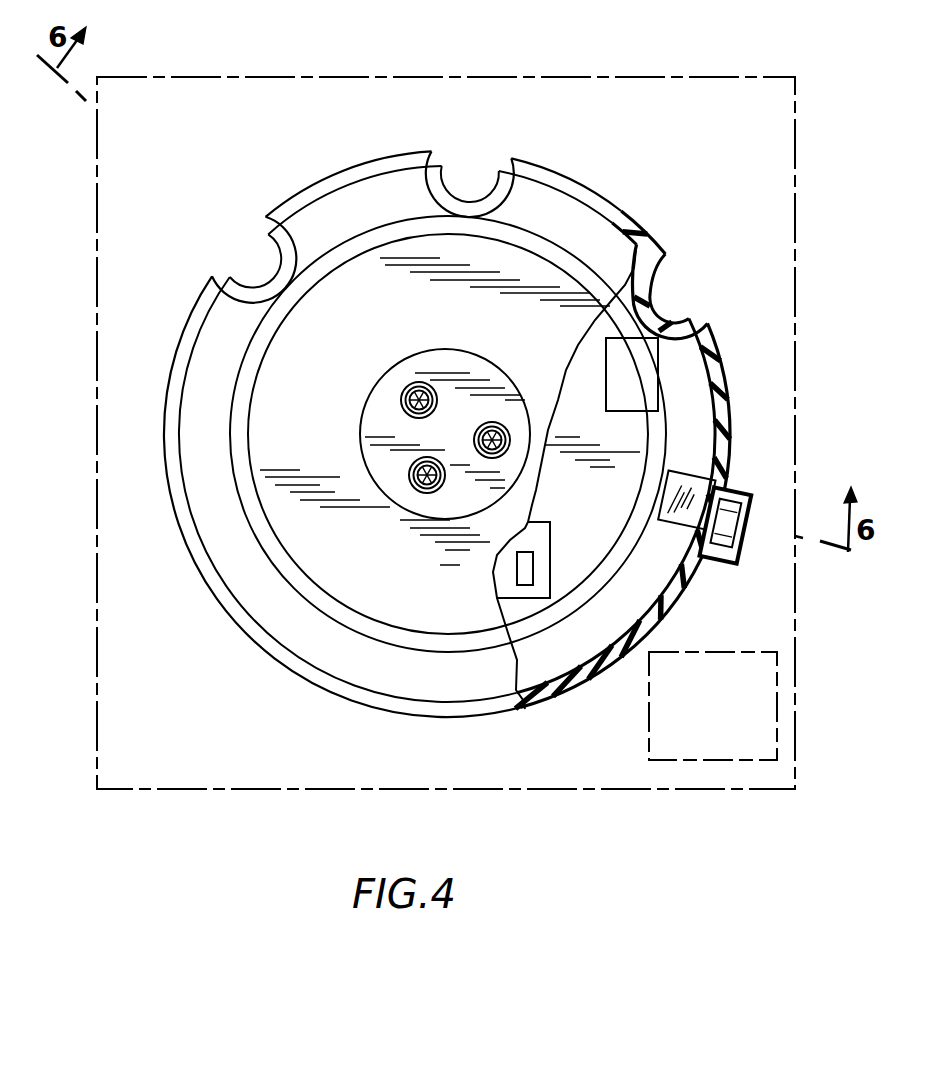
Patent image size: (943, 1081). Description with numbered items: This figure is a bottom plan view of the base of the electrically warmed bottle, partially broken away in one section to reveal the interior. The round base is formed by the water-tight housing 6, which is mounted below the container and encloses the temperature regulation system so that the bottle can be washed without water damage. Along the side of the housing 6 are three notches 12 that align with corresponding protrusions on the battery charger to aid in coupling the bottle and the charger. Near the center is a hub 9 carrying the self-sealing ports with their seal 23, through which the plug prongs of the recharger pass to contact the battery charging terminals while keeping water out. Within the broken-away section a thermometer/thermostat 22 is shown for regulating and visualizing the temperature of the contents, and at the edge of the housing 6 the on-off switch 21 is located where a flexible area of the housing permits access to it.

The water-tight housing 6 is at (527, 163).
The notches 12 is at (446, 162).
The central hub 9 is at (463, 349).
The seal 23 is at (462, 437).
The thermometer/thermostat 22 is at (492, 576).
The on-off switch 21 is at (687, 480).